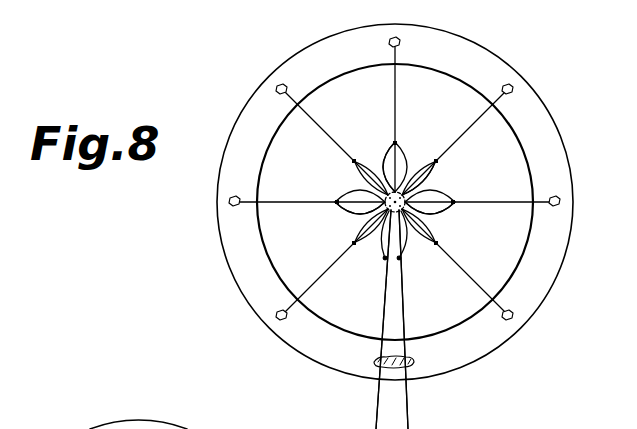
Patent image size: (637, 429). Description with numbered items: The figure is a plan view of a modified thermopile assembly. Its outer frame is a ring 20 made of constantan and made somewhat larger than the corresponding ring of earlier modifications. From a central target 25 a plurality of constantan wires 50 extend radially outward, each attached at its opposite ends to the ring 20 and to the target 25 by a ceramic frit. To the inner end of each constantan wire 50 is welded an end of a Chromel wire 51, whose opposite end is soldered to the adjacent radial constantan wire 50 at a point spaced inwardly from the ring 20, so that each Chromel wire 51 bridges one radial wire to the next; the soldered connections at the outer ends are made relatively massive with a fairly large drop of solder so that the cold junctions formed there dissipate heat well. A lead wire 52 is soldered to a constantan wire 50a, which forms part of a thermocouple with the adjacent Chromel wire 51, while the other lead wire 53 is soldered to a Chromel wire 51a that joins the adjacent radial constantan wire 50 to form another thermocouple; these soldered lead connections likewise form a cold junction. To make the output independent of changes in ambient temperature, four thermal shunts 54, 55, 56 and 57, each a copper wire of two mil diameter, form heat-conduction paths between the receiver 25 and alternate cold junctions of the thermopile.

The ring 20 is at (230, 248).
The constantan wires 50 is at (470, 124).
The constantan wire 50a is at (400, 266).
The Chromel wires 51 is at (368, 167).
The Chromel wire 51a is at (384, 257).
The lead wire 52 is at (403, 318).
The lead wire 53 is at (382, 318).
The thermal shunt 54 is at (436, 181).
The thermal shunt 55 is at (401, 258).
The thermal shunt 56 is at (362, 216).
The thermal shunt 57 is at (389, 173).
The central target 25 is at (420, 210).